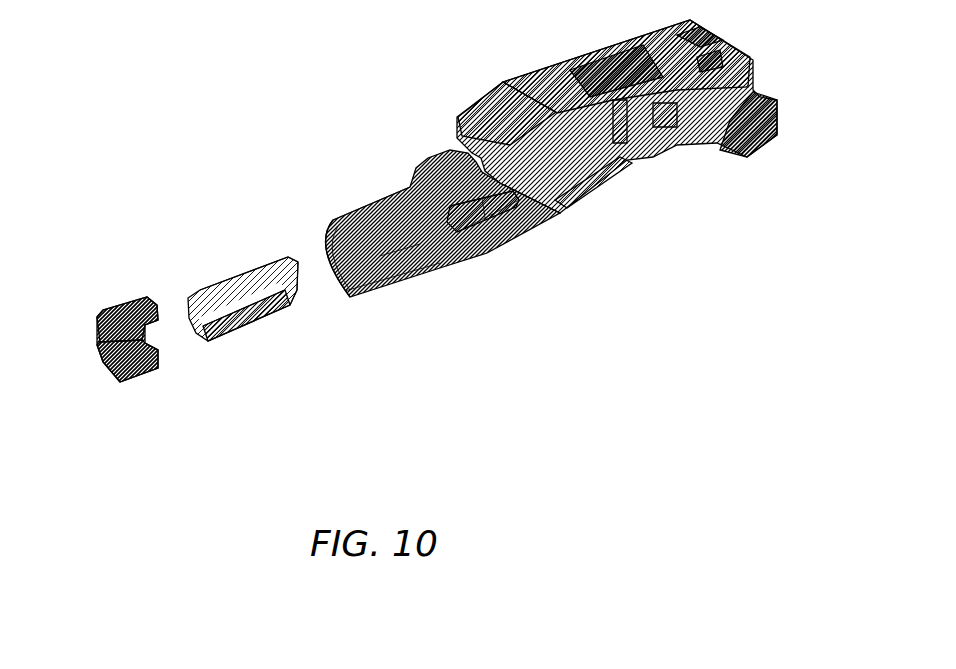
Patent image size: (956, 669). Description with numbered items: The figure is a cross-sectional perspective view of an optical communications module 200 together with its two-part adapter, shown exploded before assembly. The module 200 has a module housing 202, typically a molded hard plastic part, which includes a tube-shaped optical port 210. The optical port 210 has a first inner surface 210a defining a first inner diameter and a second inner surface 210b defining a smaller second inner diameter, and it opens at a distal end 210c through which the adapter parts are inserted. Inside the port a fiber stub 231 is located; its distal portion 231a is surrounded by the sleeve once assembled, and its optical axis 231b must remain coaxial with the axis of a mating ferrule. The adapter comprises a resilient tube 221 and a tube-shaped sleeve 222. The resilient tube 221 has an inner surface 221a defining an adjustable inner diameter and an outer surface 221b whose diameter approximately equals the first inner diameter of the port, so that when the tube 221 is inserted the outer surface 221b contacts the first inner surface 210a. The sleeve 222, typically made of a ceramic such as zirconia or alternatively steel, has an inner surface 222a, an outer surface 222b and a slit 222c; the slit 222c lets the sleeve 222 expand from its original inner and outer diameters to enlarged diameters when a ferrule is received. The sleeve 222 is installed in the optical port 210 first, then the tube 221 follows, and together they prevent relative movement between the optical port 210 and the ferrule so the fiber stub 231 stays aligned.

The optical communications module 200 is at (280, 103).
The module housing 202 is at (760, 123).
The optical port 210 is at (443, 263).
The first inner surface 210a is at (353, 278).
The second inner surface 210b is at (400, 248).
The distal end 210c is at (333, 222).
The resilient tube 221 is at (150, 367).
The inner surface 221a is at (103, 343).
The outer surface 221b is at (120, 308).
The sleeve 222 is at (269, 265).
The inner surface 222a is at (280, 293).
The outer surface 222b is at (213, 282).
The slit 222c is at (223, 312).
The fiber stub 231 is at (463, 230).
The distal portion 231a is at (457, 213).
The optical axis 231b is at (487, 213).